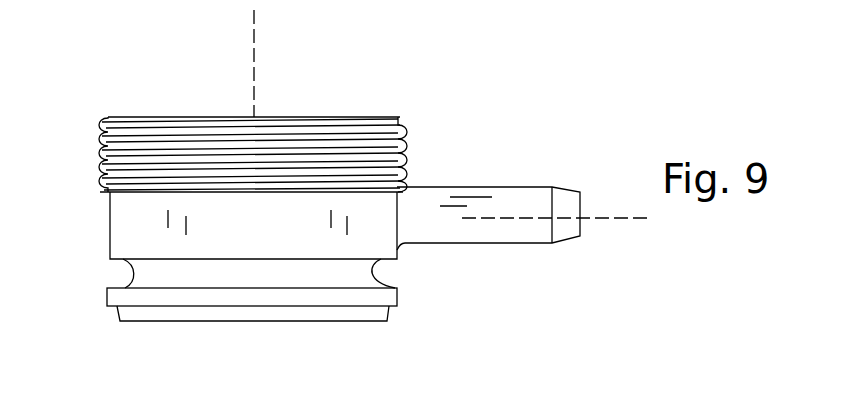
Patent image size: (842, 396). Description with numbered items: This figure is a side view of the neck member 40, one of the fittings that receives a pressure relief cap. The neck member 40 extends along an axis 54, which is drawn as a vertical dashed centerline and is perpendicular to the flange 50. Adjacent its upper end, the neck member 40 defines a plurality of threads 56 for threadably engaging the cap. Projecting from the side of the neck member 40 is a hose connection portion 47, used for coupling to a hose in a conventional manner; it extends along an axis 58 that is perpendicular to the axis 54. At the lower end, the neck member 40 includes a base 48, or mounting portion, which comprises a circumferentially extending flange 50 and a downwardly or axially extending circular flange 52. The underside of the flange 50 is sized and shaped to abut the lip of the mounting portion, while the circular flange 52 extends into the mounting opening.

The neck member 40 is at (457, 78).
The hose connection portion 47 is at (508, 187).
The base 48 is at (100, 307).
The flange 50 is at (397, 288).
The circular flange 52 is at (388, 320).
The axis 54 is at (252, 38).
The threads 56 is at (104, 153).
The axis 58 is at (610, 218).